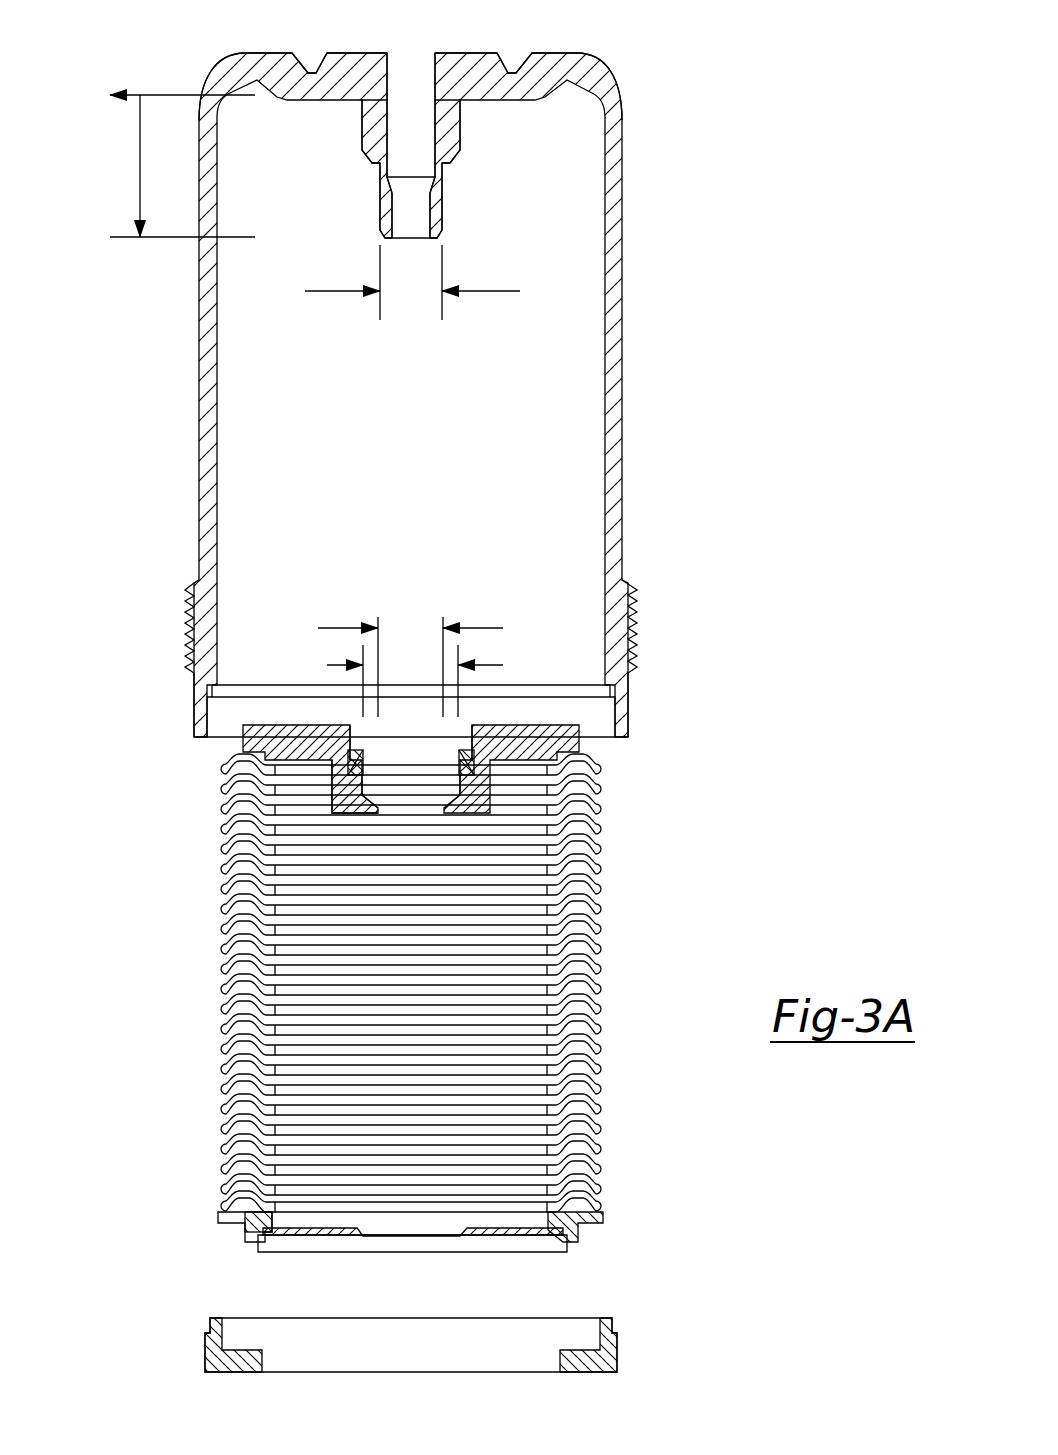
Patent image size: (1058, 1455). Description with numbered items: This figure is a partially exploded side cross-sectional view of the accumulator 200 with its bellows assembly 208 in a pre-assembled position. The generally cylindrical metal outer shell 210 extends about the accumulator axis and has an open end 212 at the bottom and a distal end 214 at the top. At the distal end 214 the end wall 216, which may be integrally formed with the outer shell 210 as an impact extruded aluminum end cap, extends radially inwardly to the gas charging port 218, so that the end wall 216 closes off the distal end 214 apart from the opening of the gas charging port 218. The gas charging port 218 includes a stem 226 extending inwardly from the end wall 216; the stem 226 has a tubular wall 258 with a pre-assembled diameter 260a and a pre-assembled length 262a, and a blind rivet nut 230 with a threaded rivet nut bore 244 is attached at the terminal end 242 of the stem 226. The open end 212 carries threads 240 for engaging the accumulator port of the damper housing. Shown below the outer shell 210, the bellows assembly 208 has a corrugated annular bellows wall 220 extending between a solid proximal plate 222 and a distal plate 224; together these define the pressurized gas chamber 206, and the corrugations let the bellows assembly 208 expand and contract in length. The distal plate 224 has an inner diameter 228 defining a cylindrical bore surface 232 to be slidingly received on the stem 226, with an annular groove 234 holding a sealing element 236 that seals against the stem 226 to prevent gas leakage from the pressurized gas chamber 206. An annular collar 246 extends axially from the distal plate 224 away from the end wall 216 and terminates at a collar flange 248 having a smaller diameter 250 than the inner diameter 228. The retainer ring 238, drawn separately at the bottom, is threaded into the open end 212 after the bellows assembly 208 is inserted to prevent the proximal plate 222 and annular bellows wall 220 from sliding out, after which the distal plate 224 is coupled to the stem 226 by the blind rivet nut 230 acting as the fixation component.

The accumulator 200 is at (714, 66).
The pressurized gas chamber 206 is at (485, 1115).
The bellows assembly 208 is at (182, 1043).
The outer shell 210 is at (205, 440).
The open end 212 is at (629, 742).
The distal end 214 is at (261, 49).
The end wall 216 is at (495, 85).
The gas charging port 218 is at (403, 85).
The annular bellows wall 220 is at (585, 970).
The proximal plate 222 is at (302, 1232).
The distal plate 224 is at (515, 727).
The stem 226 is at (462, 135).
The inner diameter 228 is at (330, 668).
The blind rivet nut 230 is at (448, 226).
The cylindrical bore surface 232 is at (445, 770).
The annular groove 234 is at (475, 780).
The sealing element 236 is at (348, 769).
The retainer ring 238 is at (620, 1352).
The threads 240 is at (642, 622).
The terminal end 242 is at (358, 157).
The rivet nut bore 244 is at (418, 212).
The annular collar 246 is at (338, 807).
The collar flange 248 is at (375, 808).
The smaller diameter 250 is at (348, 617).
The tubular wall 258 is at (437, 193).
The pre-assembled diameter 260a is at (347, 300).
The pre-assembled length 262a is at (140, 163).